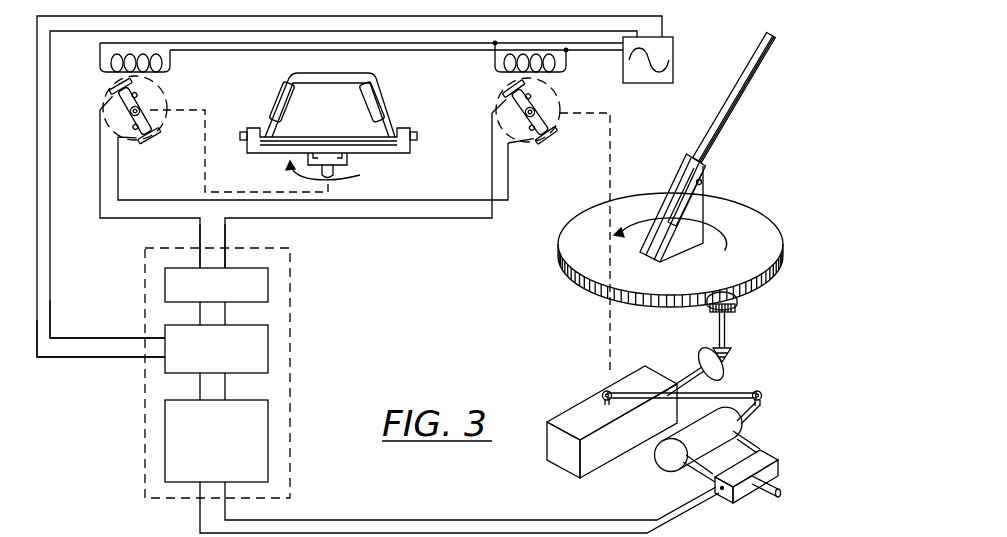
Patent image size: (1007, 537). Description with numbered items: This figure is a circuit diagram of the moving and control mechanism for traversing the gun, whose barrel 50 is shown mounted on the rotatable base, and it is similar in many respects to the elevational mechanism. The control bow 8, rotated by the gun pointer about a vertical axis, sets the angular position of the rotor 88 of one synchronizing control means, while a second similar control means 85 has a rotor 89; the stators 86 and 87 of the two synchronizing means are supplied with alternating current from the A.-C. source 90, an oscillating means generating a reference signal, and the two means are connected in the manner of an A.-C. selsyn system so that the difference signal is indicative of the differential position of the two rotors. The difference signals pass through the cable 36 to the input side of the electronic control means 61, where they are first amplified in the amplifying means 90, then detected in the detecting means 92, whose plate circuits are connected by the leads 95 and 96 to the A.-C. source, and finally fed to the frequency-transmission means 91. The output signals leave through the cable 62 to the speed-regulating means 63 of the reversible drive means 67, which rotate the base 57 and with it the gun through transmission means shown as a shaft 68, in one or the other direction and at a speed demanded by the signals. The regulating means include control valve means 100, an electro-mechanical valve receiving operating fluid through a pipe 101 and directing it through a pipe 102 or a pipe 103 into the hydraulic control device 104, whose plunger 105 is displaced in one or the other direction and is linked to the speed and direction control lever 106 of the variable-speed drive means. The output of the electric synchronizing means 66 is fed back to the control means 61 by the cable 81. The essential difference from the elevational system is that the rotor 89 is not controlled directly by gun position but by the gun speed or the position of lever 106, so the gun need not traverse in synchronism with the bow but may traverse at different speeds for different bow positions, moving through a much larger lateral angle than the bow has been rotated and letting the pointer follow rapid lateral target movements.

The control bow 8 is at (354, 78).
The cable 36 is at (200, 222).
The barrel 50 is at (732, 123).
The baseplate 57 is at (733, 215).
The electronic control means 61 is at (282, 328).
The cable 62 is at (407, 533).
The speed-regulating means 63 is at (716, 460).
The electric synchronizing means 66 is at (548, 115).
The reversible drive means 67 is at (553, 460).
The shaft 68 is at (723, 337).
The cable 81 is at (227, 227).
The control means 85 is at (157, 116).
The stator 86 is at (110, 75).
The stator 87 is at (503, 78).
The rotor 88 is at (147, 137).
The rotor 89 is at (543, 140).
The A.-C. source / amplifying means 90 is at (669, 52).
The frequency-transmission means 91 is at (268, 456).
The detecting means 92 is at (268, 366).
The lead 95 is at (88, 338).
The lead 96 is at (97, 358).
The control valve means 100 is at (762, 453).
The pipe 101 is at (767, 494).
The pipe 102 is at (737, 442).
The pipe 103 is at (703, 470).
The hydraulic control device 104 is at (665, 463).
The plunger 105 is at (760, 403).
The speed and direction control lever 106 is at (725, 393).